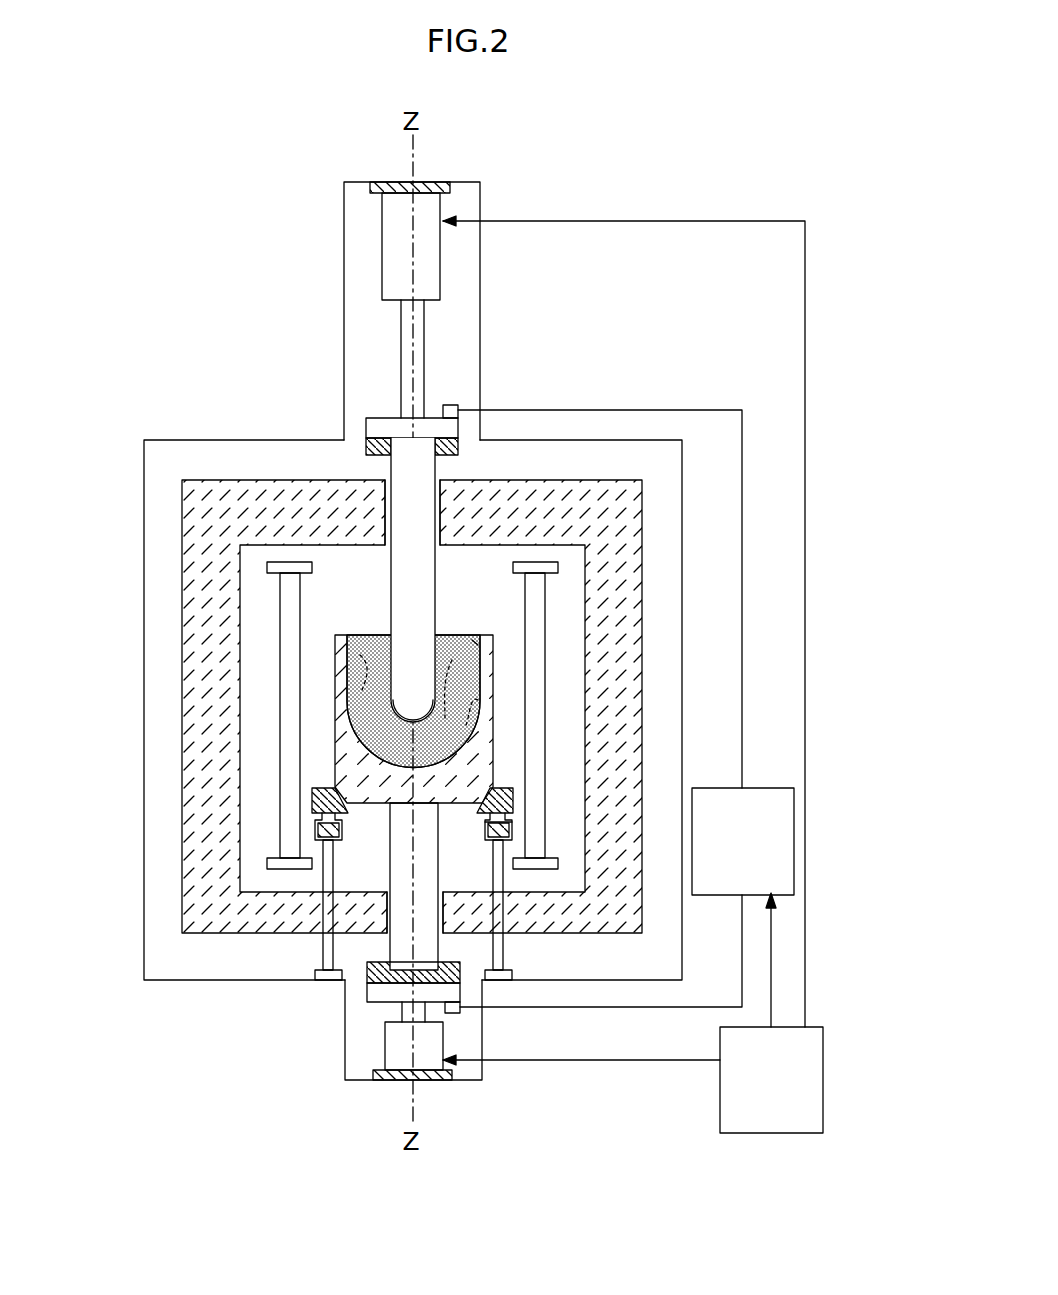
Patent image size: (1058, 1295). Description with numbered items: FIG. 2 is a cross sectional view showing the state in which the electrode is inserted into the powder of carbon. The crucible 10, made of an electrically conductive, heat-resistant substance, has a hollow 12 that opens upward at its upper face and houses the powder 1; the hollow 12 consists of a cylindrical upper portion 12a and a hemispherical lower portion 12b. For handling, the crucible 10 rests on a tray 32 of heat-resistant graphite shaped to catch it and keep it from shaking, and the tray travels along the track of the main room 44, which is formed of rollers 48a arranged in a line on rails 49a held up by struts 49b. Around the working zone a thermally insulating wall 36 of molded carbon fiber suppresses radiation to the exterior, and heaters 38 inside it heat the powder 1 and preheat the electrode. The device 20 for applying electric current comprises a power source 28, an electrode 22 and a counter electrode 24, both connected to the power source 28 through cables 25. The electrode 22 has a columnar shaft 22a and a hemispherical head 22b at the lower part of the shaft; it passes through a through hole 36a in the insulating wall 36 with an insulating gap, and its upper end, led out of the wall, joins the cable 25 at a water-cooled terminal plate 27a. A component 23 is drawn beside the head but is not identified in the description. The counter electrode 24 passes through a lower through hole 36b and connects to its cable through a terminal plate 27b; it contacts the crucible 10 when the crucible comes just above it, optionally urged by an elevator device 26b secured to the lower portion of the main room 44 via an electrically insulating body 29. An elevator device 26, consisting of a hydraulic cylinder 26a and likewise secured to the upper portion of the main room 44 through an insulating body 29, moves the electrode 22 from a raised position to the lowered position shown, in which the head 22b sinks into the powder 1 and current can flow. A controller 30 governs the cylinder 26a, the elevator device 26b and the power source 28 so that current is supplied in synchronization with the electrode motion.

The powder 1 is at (472, 640).
The crucible 10 is at (338, 640).
The hollow 12 is at (350, 700).
The upper portion 12a is at (360, 655).
The lower portion 12b is at (478, 700).
The device for applying electric current 20 is at (240, 355).
The electrode 22 is at (385, 585).
The columnar shaft 22a is at (435, 570).
The head 22b is at (403, 700).
The seed holder 23 is at (452, 660).
The counter electrode 24 is at (398, 852).
The cable 25 is at (660, 410).
The elevator device 26 is at (461, 268).
The cylinder 26a is at (388, 262).
The elevator device 26b is at (401, 1062).
The terminal plate 27a is at (372, 445).
The terminal plate 27b is at (380, 990).
The power source 28 is at (729, 858).
The electrically insulating body 29 is at (440, 185).
The controller 30 is at (757, 1097).
The tray 32 is at (508, 790).
The thermally insulating wall 36 is at (215, 490).
The through hole 36a is at (440, 492).
The through hole 36b is at (387, 915).
The heater 38 is at (284, 690).
The main room 44 is at (178, 982).
The roller 48a is at (493, 828).
The rail 49a is at (500, 930).
The support clamp 49b is at (505, 828).